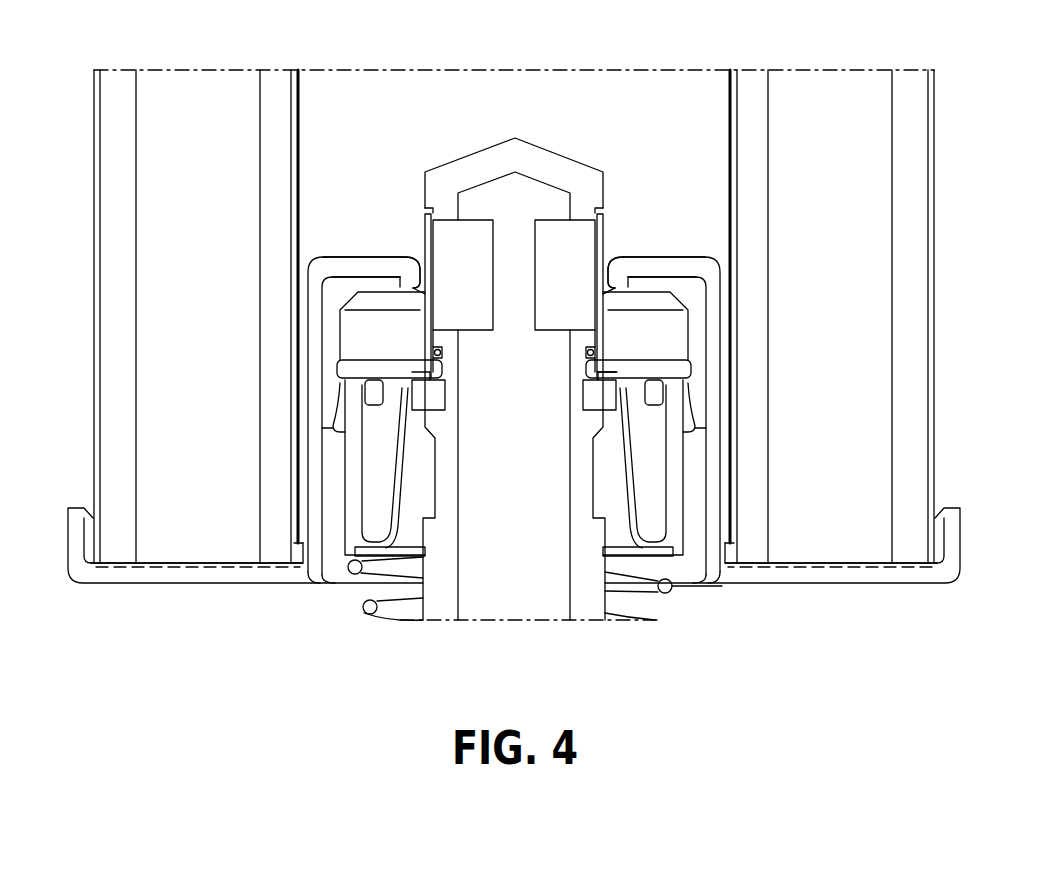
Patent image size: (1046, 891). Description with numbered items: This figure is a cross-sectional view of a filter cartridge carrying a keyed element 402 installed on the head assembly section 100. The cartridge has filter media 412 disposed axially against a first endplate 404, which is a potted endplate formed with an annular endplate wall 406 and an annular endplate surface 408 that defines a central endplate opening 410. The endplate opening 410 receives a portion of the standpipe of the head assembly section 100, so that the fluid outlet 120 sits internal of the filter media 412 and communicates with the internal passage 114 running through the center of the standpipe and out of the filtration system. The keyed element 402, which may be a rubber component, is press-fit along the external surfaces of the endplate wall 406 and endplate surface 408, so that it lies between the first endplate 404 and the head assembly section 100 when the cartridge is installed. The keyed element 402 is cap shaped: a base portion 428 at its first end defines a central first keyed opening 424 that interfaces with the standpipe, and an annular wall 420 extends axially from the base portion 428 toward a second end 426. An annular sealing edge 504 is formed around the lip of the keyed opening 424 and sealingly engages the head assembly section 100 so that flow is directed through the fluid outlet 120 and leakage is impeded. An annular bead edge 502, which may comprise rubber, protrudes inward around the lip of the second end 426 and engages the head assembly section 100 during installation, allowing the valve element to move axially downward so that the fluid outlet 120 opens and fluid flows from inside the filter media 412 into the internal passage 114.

The head assembly section 100 is at (515, 131).
The internal passage 114 is at (520, 598).
The fluid outlet 120 is at (583, 235).
The keyed element 402 is at (695, 365).
The first endplate 404 is at (67, 523).
The annular endplate wall 406 is at (315, 508).
The annular endplate surface 408 is at (368, 265).
The central endplate opening 410 is at (622, 248).
The filter media 412 is at (150, 366).
The annular wall 420 is at (333, 318).
The first keyed opening 424 is at (412, 248).
The second end 426 is at (325, 430).
The base portion 428 is at (355, 277).
The annular bead edge 502 is at (694, 405).
The annular sealing edge 504 is at (605, 290).